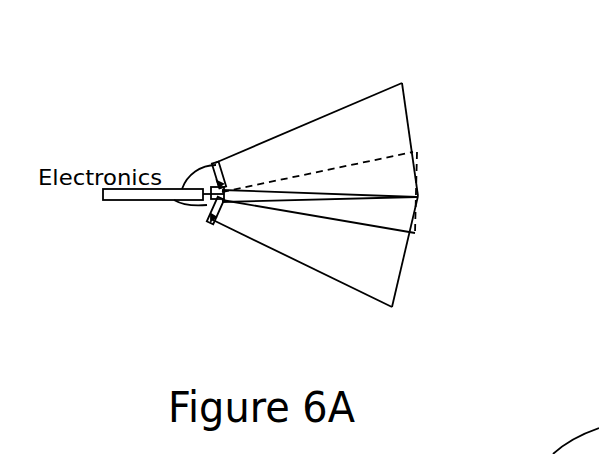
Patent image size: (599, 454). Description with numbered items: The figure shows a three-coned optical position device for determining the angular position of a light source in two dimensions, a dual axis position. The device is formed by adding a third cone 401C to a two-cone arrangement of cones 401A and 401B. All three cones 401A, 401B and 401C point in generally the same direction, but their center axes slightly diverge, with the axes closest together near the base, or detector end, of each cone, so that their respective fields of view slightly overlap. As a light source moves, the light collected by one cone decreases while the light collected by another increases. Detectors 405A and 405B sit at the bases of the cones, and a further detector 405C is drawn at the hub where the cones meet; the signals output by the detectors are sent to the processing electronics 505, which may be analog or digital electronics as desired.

The cone 401A is at (379, 88).
The cone 401B is at (400, 277).
The third cone 401C is at (417, 156).
The detector 405A is at (213, 163).
The detector 405B is at (208, 223).
The central hub element 405C is at (210, 204).
The processing electronics 505 is at (123, 201).